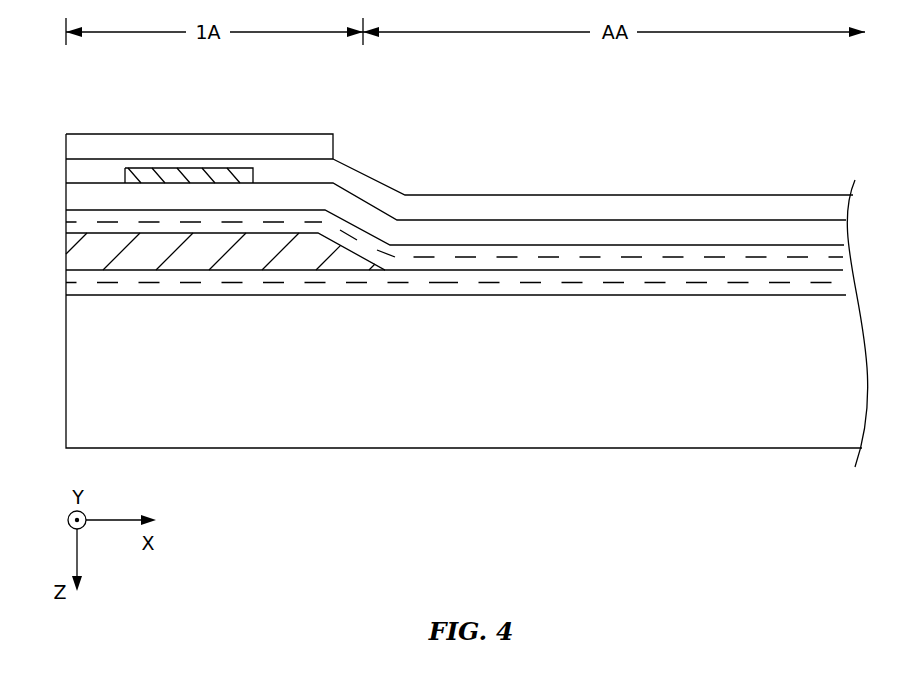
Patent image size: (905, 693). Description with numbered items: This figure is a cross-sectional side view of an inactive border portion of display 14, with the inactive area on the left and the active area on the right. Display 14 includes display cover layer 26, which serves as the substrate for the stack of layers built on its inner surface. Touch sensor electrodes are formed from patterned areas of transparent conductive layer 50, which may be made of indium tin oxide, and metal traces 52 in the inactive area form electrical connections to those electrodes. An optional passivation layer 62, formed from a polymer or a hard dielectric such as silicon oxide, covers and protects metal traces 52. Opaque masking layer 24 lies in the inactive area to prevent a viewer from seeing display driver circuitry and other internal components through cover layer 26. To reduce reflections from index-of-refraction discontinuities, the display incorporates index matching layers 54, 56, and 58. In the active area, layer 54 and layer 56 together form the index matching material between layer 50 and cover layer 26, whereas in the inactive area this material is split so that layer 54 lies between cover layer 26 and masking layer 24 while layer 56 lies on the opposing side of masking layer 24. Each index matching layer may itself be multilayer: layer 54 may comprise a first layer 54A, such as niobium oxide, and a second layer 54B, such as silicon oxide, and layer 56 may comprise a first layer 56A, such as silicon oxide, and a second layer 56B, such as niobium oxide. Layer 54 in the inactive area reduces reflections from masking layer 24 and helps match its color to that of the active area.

The display 14 is at (331, 515).
The opaque masking layer 24 is at (66, 251).
The display cover layer 26 is at (485, 440).
The transparent conductive layer 50 is at (832, 232).
The metal traces 52 is at (128, 172).
The index matching layer 54 is at (56, 270).
The first layer of layer 54 54A is at (600, 292).
The second layer of layer 54 54B is at (590, 275).
The index matching layer 56 is at (56, 210).
The first layer of layer 56 56A is at (510, 263).
The second layer of layer 56 56B is at (488, 253).
The index matching layer 58 is at (735, 200).
The passivation layer 62 is at (252, 138).